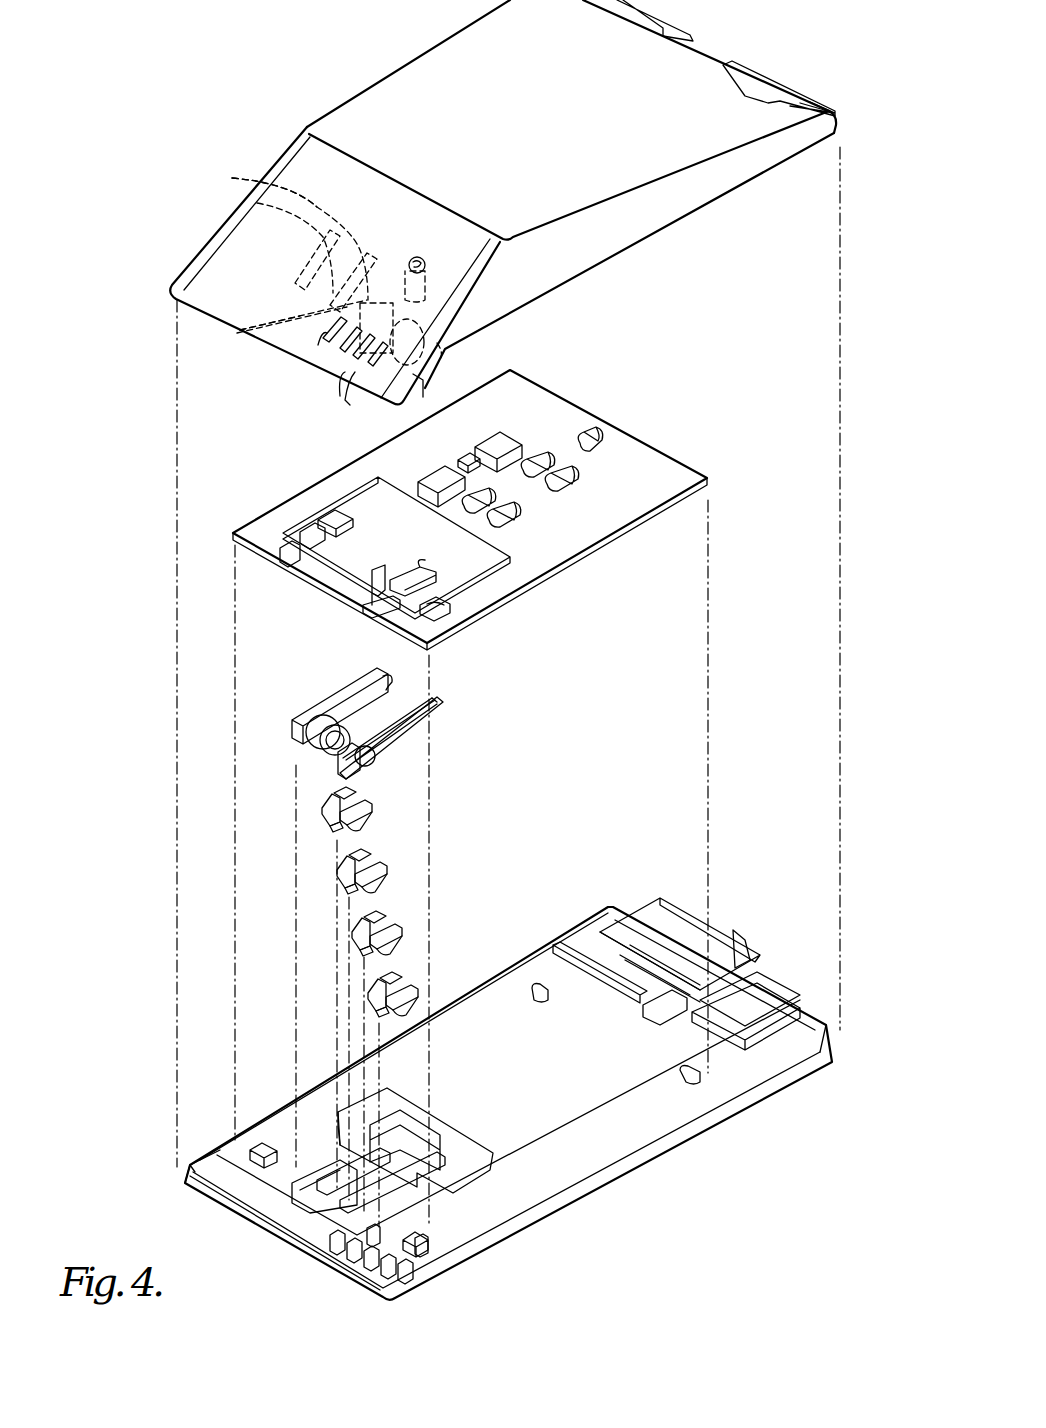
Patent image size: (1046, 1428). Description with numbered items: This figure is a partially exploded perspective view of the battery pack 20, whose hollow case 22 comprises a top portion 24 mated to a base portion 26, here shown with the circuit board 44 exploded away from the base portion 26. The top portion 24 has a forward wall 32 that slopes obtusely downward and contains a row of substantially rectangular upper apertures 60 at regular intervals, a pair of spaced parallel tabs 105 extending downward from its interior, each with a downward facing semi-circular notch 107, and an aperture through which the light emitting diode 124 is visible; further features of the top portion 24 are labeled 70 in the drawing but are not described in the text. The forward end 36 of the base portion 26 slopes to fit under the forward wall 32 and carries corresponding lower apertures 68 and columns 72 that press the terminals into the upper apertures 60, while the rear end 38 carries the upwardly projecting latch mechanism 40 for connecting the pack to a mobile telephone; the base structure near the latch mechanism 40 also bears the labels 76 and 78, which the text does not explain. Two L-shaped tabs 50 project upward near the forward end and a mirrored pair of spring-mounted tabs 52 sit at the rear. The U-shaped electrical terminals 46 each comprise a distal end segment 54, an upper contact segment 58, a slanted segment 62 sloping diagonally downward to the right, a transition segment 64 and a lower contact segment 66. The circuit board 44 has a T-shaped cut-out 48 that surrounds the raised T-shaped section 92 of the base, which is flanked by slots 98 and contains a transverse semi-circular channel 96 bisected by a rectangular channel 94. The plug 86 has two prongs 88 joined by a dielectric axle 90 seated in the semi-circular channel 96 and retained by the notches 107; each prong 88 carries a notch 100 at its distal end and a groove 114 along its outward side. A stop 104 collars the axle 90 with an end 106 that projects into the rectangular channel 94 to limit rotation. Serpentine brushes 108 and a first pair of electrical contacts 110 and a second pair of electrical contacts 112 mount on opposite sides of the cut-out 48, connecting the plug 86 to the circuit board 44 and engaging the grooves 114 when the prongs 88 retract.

The battery pack 20 is at (118, 88).
The case 22 is at (128, 462).
The top portion 24 is at (362, 88).
The base portion 26 is at (655, 1185).
The forward wall 32 is at (247, 262).
The forward end 36 is at (223, 1203).
The rear end 38 is at (770, 995).
The latch mechanism 40 is at (743, 930).
The circuit board 44 is at (677, 488).
The electrical terminals 46 is at (228, 813).
The cut-out 48 is at (310, 594).
The tabs 50 is at (263, 1143).
The tabs 52 is at (540, 984).
The distal end segment 54 is at (357, 795).
The upper contact segment 58 is at (325, 802).
The upper apertures 60 is at (318, 345).
The slanted segment 62 is at (340, 820).
The transition segment 64 is at (353, 830).
The lower contact segment 66 is at (367, 813).
The lower apertures 68 is at (374, 1245).
The opening 70 is at (383, 313).
The columns 72 is at (392, 1277).
The channel 76 is at (638, 950).
The rib 78 is at (678, 1005).
The plug 86 is at (215, 735).
The prongs 88 is at (347, 710).
The axle 90 is at (320, 730).
The raised section 92 is at (413, 1098).
The rectangular channel 94 is at (387, 1160).
The semi-circular channel 96 is at (347, 1203).
The slot 98 is at (343, 1203).
The notch 100 is at (390, 680).
The stop 104 is at (355, 735).
The tabs 105 is at (275, 185).
The end 106 is at (338, 713).
The semi-circular notch 107 is at (240, 333).
The brushes 108 is at (367, 590).
The electrical contacts 110 is at (335, 513).
The electrical contacts 112 is at (373, 567).
The groove 114 is at (417, 727).
The light emitting diode 124 is at (425, 262).